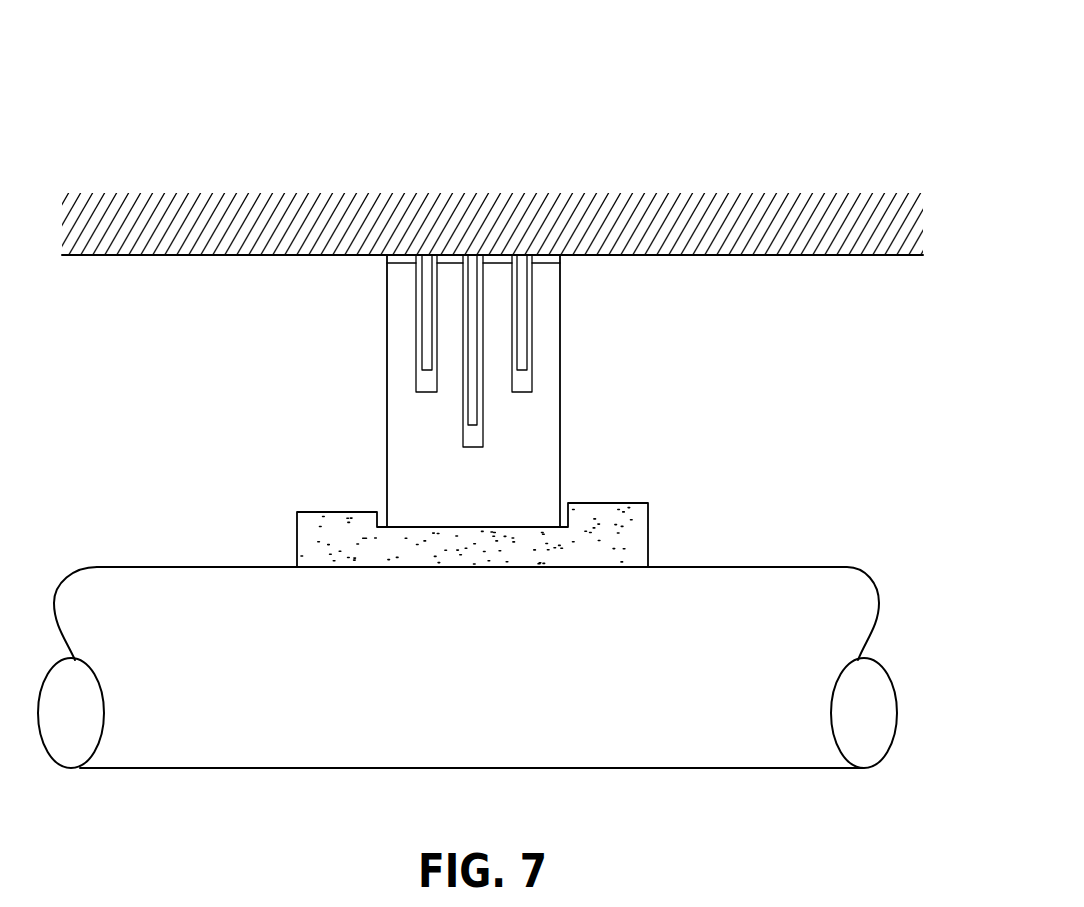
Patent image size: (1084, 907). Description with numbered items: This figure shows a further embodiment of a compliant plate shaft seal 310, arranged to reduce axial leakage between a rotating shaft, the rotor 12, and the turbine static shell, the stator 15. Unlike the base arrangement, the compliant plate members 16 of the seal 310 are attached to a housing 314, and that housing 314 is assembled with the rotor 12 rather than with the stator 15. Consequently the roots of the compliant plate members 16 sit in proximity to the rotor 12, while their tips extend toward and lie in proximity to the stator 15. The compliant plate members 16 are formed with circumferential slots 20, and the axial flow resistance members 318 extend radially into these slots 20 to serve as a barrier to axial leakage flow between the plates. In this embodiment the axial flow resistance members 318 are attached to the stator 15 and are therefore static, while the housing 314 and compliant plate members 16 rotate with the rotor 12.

The seal 310 is at (511, 96).
The stator 15 is at (380, 184).
The compliant plate members 16 is at (533, 458).
The axial flow resistance members 318 is at (501, 320).
The circumferential slots 20 is at (448, 467).
The housing 314 is at (621, 542).
The rotor 12 is at (819, 609).